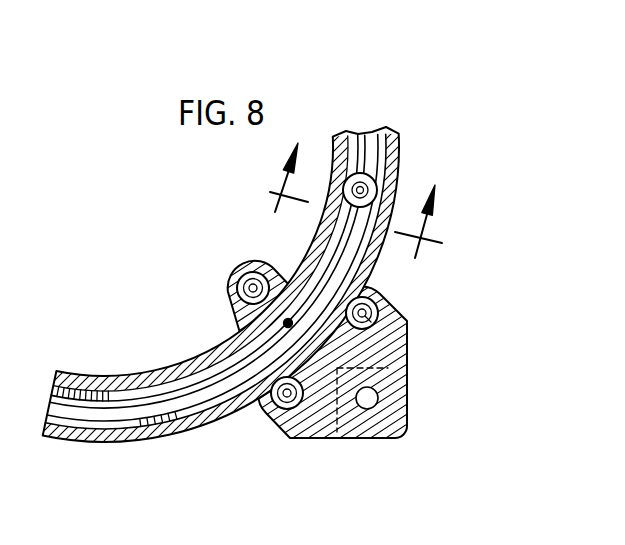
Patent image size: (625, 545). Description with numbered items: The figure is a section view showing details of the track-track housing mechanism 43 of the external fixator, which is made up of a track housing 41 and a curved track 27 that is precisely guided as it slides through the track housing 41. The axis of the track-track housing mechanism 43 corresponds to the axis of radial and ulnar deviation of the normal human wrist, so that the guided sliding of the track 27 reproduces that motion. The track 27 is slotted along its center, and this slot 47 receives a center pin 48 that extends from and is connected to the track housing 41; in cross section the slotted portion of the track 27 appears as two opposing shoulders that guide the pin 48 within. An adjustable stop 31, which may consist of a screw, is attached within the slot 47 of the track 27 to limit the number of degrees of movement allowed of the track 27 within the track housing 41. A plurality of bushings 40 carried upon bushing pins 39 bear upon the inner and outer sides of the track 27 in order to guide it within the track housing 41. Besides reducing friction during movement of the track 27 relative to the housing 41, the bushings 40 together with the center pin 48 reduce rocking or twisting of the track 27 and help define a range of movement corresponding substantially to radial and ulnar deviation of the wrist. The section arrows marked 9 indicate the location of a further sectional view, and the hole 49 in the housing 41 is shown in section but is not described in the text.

The section line 9- 9 is at (354, 206).
The curved track 27 is at (107, 446).
The adjustable stop 31 is at (346, 180).
The bushing pin 39 is at (260, 280).
The bushing 40 is at (236, 288).
The track housing 41 is at (315, 432).
The track-track housing mechanism 43 is at (207, 288).
The slot 47 is at (116, 407).
The center pin 48 is at (228, 334).
The mounting hole 49 is at (378, 401).